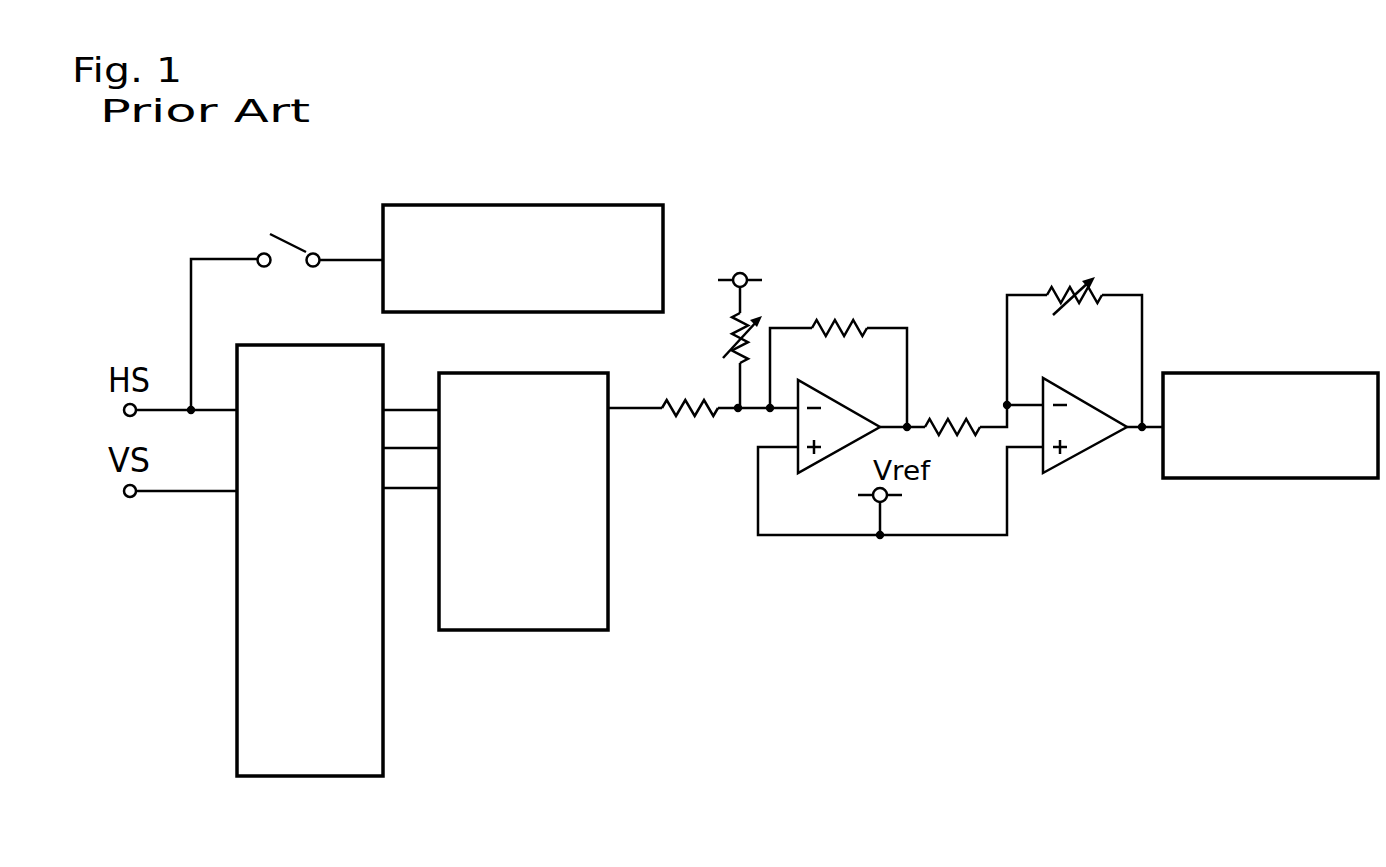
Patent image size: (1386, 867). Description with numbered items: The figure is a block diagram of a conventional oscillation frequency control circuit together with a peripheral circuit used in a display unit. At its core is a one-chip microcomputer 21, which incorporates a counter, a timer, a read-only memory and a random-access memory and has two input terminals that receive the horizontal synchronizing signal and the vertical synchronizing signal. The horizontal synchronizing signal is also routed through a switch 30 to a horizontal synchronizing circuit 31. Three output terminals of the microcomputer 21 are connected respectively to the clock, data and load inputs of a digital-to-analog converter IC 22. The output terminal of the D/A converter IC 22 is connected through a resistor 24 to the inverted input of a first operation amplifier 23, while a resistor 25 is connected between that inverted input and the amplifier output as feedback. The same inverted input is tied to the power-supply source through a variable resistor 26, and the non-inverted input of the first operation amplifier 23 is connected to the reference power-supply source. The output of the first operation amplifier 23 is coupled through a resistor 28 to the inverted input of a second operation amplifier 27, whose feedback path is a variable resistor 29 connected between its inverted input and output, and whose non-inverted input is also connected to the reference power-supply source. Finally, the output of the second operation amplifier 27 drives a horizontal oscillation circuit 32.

The one-chip microcomputer 21 is at (293, 345).
The digital-to-analog converter IC 22 is at (515, 632).
The first operation amplifier 23 is at (797, 427).
The resistor 24 is at (694, 396).
The resistor 25 is at (845, 313).
The variable resistor 26 is at (757, 312).
The second operation amplifier 27 is at (1085, 455).
The resistor 28 is at (950, 408).
The variable resistor 29 is at (1070, 281).
The switch 30 is at (290, 236).
The horizontal synchronizing circuit 31 is at (527, 205).
The horizontal oscillation circuit 32 is at (1260, 373).